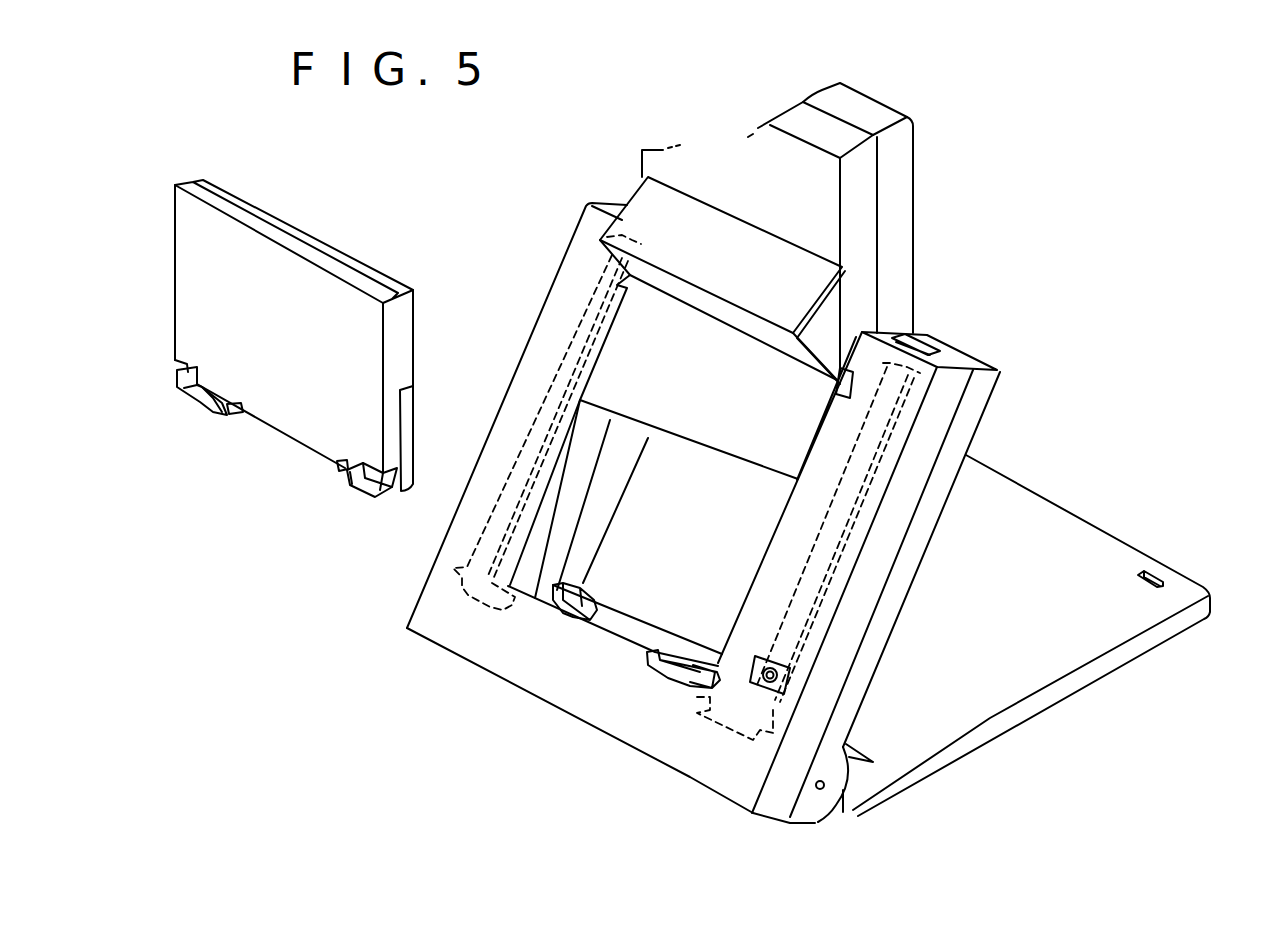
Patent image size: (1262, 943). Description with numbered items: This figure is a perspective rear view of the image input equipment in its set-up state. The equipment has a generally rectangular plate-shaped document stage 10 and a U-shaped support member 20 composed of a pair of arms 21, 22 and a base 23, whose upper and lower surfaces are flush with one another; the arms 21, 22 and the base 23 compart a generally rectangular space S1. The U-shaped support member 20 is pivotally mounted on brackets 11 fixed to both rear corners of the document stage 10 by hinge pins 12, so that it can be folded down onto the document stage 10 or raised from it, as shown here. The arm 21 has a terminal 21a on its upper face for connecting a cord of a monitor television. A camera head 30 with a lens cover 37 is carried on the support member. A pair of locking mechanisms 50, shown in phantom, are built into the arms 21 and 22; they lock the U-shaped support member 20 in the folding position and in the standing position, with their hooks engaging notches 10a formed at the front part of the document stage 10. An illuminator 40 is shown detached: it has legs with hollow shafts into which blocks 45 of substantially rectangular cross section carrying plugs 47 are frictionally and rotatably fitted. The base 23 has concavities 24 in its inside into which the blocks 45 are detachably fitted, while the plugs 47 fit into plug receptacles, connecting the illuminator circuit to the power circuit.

The document stage 10 is at (1070, 528).
The notches 10a is at (1153, 573).
The brackets 11 is at (840, 817).
The hinge pins 12 is at (817, 790).
The U-shaped support member 20 is at (548, 707).
The arm 21 is at (705, 768).
The terminal 21a is at (790, 670).
The arm 22 is at (438, 573).
The base 23 is at (597, 715).
The concavities 24 is at (553, 613).
The camera head 30 is at (916, 268).
The lens cover 37 is at (642, 212).
The illuminator 40 is at (287, 420).
The blocks 45 is at (213, 415).
The plugs 47 is at (228, 416).
The locking mechanisms 50 is at (569, 347).
The rectangular space S1 is at (708, 553).